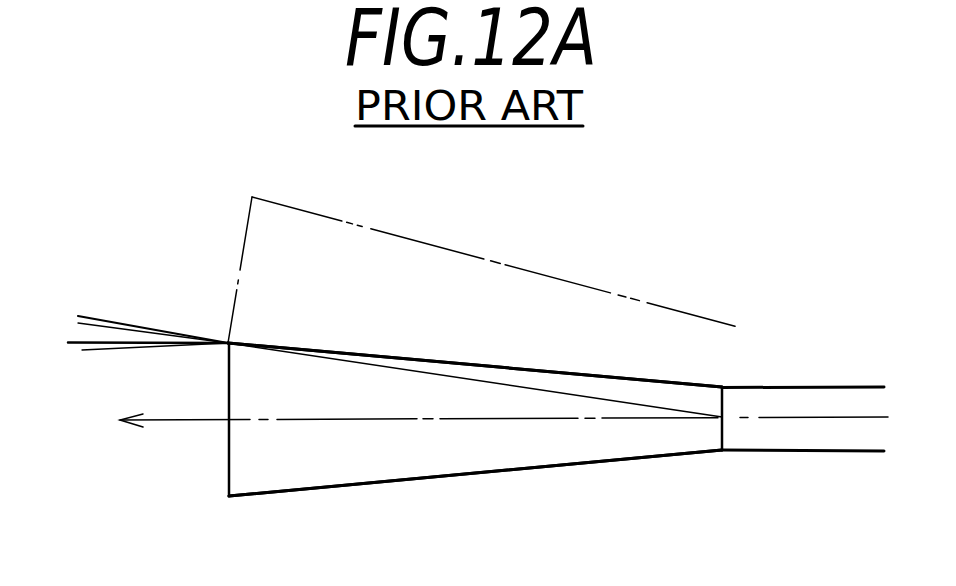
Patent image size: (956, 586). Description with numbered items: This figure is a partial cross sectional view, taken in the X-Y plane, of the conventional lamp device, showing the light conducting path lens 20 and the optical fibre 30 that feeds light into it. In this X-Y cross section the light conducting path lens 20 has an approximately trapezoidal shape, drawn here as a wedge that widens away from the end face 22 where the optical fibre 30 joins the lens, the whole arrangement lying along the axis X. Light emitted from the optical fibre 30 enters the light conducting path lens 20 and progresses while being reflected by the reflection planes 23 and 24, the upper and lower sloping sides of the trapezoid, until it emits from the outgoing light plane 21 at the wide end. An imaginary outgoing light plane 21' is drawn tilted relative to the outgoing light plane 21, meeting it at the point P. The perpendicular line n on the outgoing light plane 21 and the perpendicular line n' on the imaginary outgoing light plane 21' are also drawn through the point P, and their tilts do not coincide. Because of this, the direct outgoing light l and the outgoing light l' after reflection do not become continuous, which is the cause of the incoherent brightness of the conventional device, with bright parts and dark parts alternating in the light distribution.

The light conducting path lens 20 is at (643, 447).
The outgoing light plane 21 is at (187, 419).
The imaginary outgoing light plane 21' is at (444, 270).
The lens exit end face 22 is at (723, 433).
The reflection plane 23 is at (533, 372).
The reflection plane 24 is at (515, 473).
The optical fibre 30 is at (810, 400).
The X axis X is at (493, 422).
The point P is at (228, 343).
The direct outgoing light l is at (386, 343).
The outgoing light after reflection l' is at (126, 362).
The perpendicular line n is at (155, 369).
The perpendicular line n' is at (153, 306).